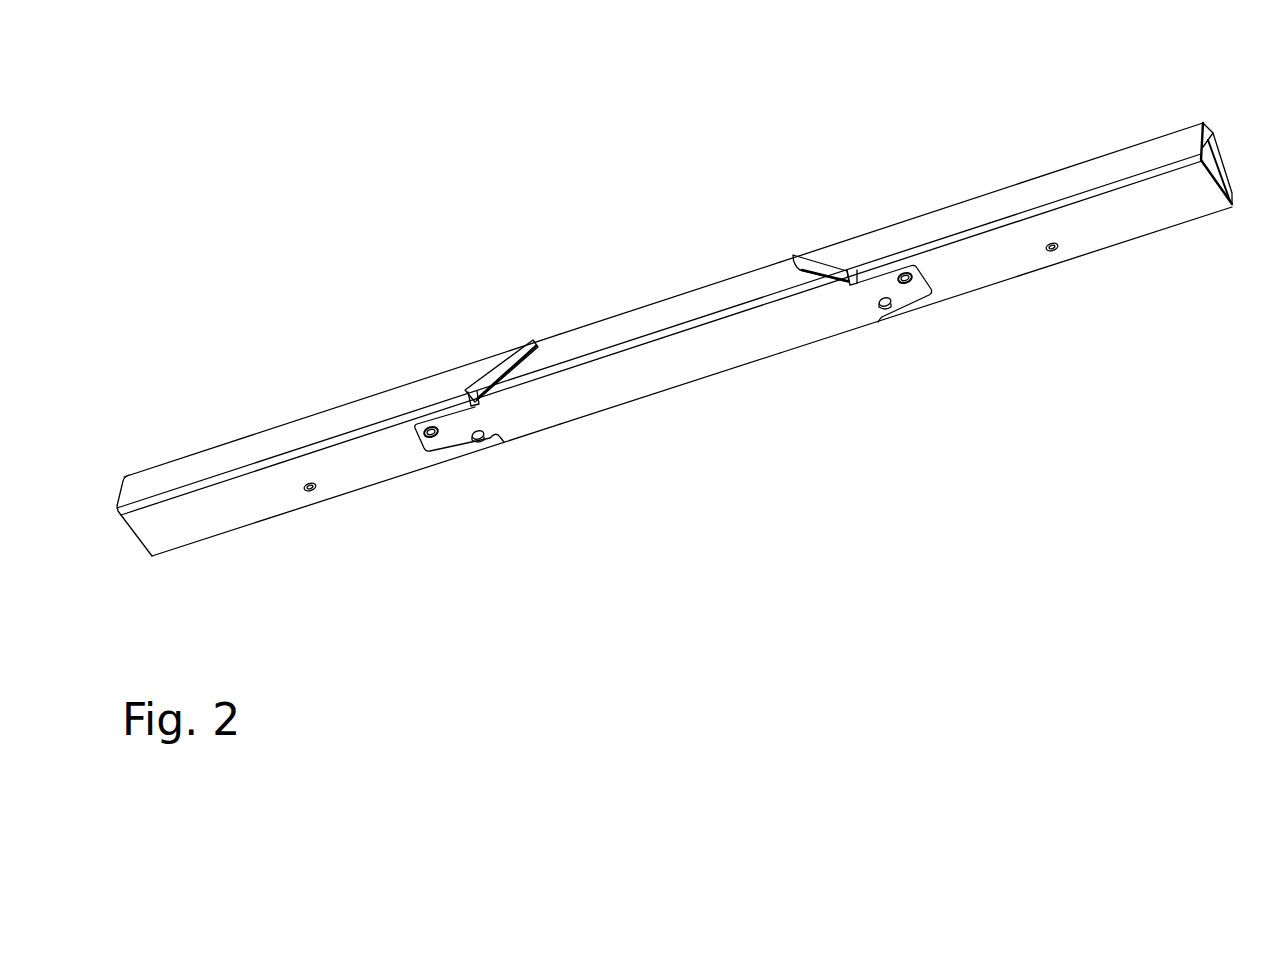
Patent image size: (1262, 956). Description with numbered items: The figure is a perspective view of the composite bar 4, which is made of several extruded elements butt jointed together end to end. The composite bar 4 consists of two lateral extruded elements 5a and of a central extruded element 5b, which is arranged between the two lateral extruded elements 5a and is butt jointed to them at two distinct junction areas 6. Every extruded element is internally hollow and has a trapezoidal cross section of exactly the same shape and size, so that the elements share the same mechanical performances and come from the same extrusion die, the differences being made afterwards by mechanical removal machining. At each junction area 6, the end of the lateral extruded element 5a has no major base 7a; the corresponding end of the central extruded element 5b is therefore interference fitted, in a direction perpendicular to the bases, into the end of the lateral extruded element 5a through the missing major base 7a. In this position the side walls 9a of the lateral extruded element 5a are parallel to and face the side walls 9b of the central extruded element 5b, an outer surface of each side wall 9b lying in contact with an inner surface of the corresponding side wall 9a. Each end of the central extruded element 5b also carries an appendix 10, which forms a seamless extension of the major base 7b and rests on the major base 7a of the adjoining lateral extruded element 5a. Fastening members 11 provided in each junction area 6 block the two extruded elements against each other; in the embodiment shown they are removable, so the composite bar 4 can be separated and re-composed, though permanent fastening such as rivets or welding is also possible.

The composite bar 4 is at (1024, 649).
The lateral extruded element 5a is at (674, 297).
The central extruded element 5b is at (670, 288).
The junction area 6 is at (695, 358).
The major base of the lateral extruded element 7a is at (349, 480).
The major base of the central extruded element 7b is at (696, 364).
The side wall of the lateral extruded element 9a is at (357, 412).
The side wall of the central extruded element 9b is at (625, 327).
The appendix 10 is at (450, 486).
The fastening member 11 is at (430, 427).